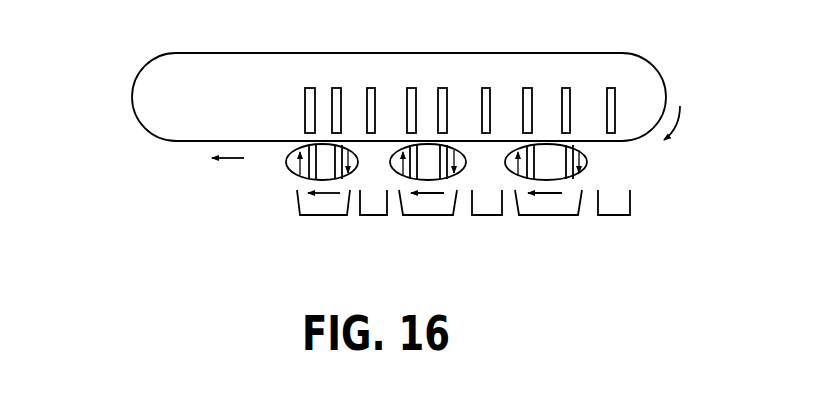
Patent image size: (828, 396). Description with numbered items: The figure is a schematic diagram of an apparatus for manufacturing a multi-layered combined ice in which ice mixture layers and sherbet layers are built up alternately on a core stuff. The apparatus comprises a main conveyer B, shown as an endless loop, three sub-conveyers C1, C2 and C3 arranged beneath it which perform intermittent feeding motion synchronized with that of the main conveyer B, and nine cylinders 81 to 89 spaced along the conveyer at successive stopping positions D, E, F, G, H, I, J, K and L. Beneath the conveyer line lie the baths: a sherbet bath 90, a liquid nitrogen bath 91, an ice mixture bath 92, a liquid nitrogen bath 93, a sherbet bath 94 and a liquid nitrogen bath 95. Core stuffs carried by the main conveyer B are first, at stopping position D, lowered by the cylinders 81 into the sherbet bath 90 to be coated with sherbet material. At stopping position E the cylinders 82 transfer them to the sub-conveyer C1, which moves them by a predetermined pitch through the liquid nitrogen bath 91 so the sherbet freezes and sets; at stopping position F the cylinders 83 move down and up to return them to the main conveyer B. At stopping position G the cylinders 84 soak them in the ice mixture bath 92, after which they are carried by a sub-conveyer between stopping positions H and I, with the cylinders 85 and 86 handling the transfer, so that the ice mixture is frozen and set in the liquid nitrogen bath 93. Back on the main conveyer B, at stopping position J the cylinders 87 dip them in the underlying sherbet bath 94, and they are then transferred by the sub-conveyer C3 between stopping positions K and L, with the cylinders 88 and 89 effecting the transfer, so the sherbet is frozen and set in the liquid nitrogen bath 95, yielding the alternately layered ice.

The main conveyer B is at (148, 138).
The cylinders 81 is at (632, 72).
The cylinders 82 is at (574, 72).
The cylinders 83 is at (532, 72).
The cylinders 84 is at (494, 72).
The cylinders 85 is at (452, 72).
The cylinders 86 is at (414, 72).
The cylinders 87 is at (373, 72).
The cylinders 88 is at (338, 72).
The cylinders 89 is at (287, 72).
The sherbet bath 90 is at (630, 215).
The liquid nitrogen bath 91 is at (565, 215).
The ice mixture bath 92 is at (487, 215).
The liquid nitrogen bath 93 is at (410, 215).
The sherbet bath 94 is at (373, 215).
The liquid nitrogen bath 95 is at (310, 215).
The sub-conveyer C1 is at (587, 157).
The sub-conveyer C2 is at (467, 163).
The sub-conveyer C3 is at (286, 162).
The stopping position D is at (615, 136).
The stopping position E is at (570, 136).
The stopping position F is at (532, 136).
The stopping position G is at (490, 136).
The stopping position H is at (447, 136).
The stopping position I is at (416, 136).
The stopping position J is at (375, 136).
The stopping position K is at (341, 136).
The stopping position L is at (305, 136).